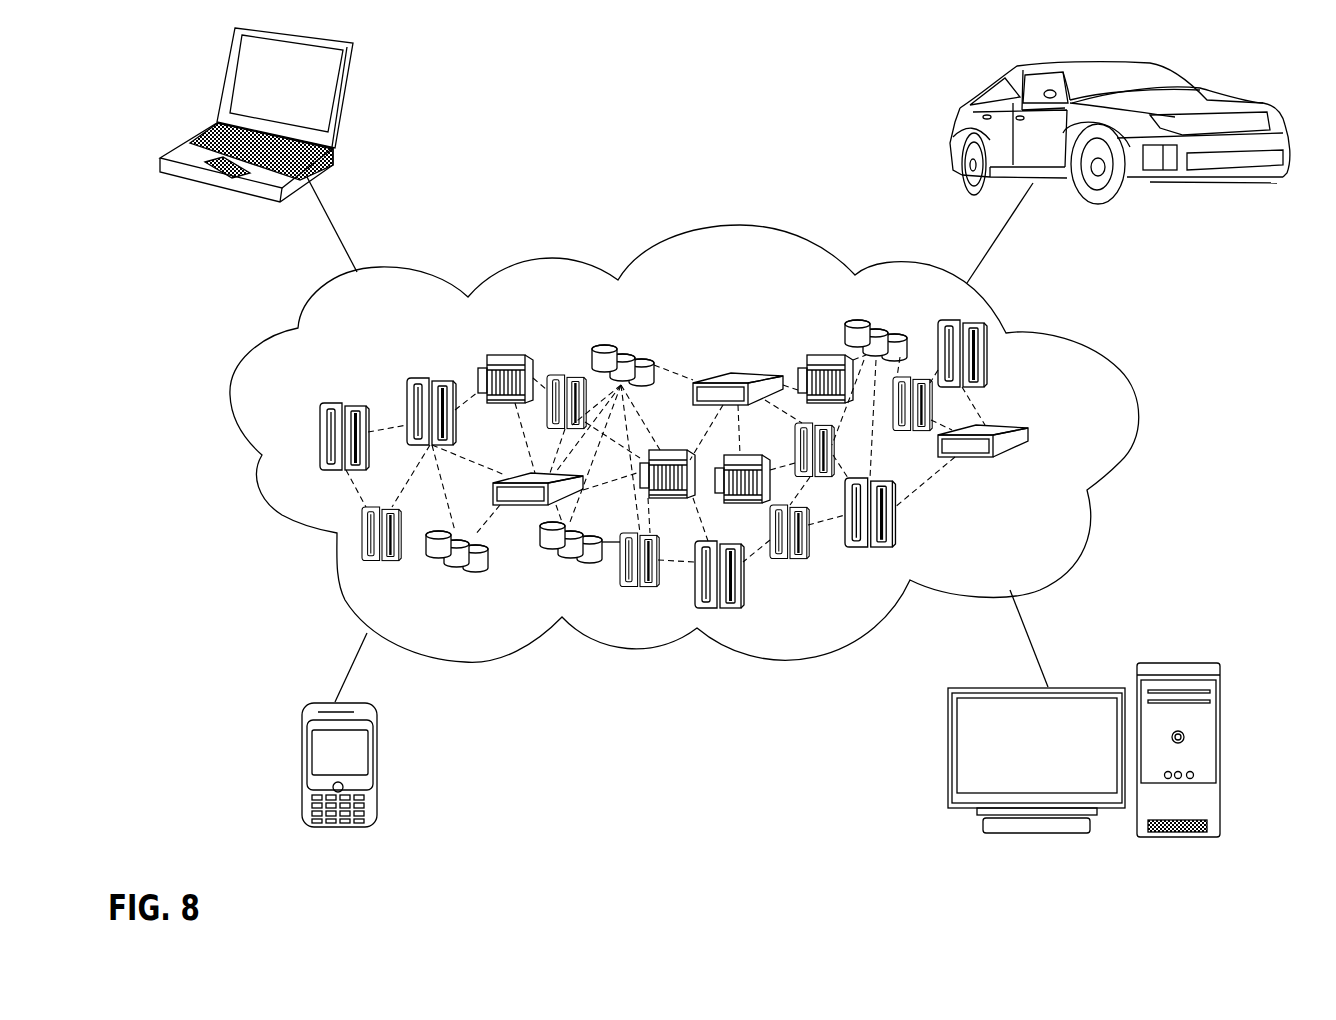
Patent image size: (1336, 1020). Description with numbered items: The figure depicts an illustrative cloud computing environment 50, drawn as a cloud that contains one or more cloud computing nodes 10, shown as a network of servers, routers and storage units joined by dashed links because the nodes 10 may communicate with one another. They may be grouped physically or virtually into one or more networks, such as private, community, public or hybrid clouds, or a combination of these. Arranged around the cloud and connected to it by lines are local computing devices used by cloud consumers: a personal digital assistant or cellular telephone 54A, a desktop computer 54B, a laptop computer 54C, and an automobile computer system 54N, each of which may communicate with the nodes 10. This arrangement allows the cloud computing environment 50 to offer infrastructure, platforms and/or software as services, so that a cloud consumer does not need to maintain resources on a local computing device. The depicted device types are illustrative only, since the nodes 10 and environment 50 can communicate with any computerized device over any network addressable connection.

The cloud computing node 10 is at (1068, 436).
The cloud computing environment 50 is at (1098, 348).
The personal digital assistant or cellular telephone 54A is at (303, 768).
The desktop computer 54B is at (1180, 662).
The laptop computer 54C is at (347, 103).
The automobile computer system 54N is at (958, 110).